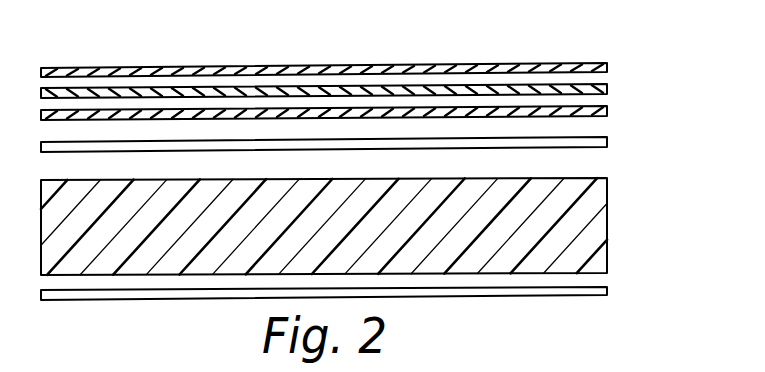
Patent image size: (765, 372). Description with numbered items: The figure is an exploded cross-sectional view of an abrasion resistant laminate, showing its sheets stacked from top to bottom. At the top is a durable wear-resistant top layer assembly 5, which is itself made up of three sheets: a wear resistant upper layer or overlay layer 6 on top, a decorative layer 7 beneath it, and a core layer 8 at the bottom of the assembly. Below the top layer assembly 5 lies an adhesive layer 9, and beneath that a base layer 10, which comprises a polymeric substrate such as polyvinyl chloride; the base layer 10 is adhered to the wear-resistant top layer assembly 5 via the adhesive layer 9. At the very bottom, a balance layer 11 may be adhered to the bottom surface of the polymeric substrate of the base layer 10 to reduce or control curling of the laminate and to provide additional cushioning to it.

The wear-resistant top layer assembly 5 is at (350, 69).
The overlay layer 6 is at (292, 66).
The decorative layer 7 is at (338, 91).
The core layer 8 is at (403, 114).
The adhesive layer 9 is at (567, 147).
The base layer 10 is at (595, 230).
The balance layer 11 is at (570, 293).